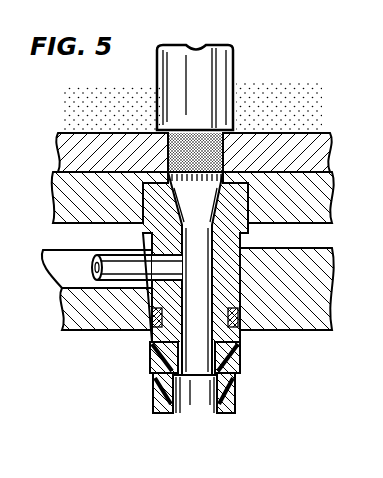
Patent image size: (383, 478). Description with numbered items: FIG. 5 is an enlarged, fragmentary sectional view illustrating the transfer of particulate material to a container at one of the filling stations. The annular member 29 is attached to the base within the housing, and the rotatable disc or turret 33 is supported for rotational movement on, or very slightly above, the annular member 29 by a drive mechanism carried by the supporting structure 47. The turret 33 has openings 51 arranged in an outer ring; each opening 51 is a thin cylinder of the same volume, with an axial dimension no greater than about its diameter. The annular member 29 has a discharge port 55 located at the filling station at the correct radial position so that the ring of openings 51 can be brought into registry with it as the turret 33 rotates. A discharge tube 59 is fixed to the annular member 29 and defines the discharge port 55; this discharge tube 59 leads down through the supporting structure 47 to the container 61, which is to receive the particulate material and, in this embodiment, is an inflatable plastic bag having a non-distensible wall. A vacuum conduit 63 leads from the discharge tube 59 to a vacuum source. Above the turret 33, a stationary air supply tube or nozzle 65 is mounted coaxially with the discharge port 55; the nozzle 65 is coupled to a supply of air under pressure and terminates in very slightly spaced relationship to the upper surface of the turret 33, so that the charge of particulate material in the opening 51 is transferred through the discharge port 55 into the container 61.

The annular member 29 is at (304, 180).
The turret 33 is at (303, 151).
The supporting structure 47 is at (302, 313).
The openings 51 is at (220, 157).
The discharge port 55 is at (200, 207).
The discharge tube 59 is at (244, 262).
The container 61 is at (232, 403).
The vacuum conduit 63 is at (131, 272).
The air supply nozzle 65 is at (208, 64).